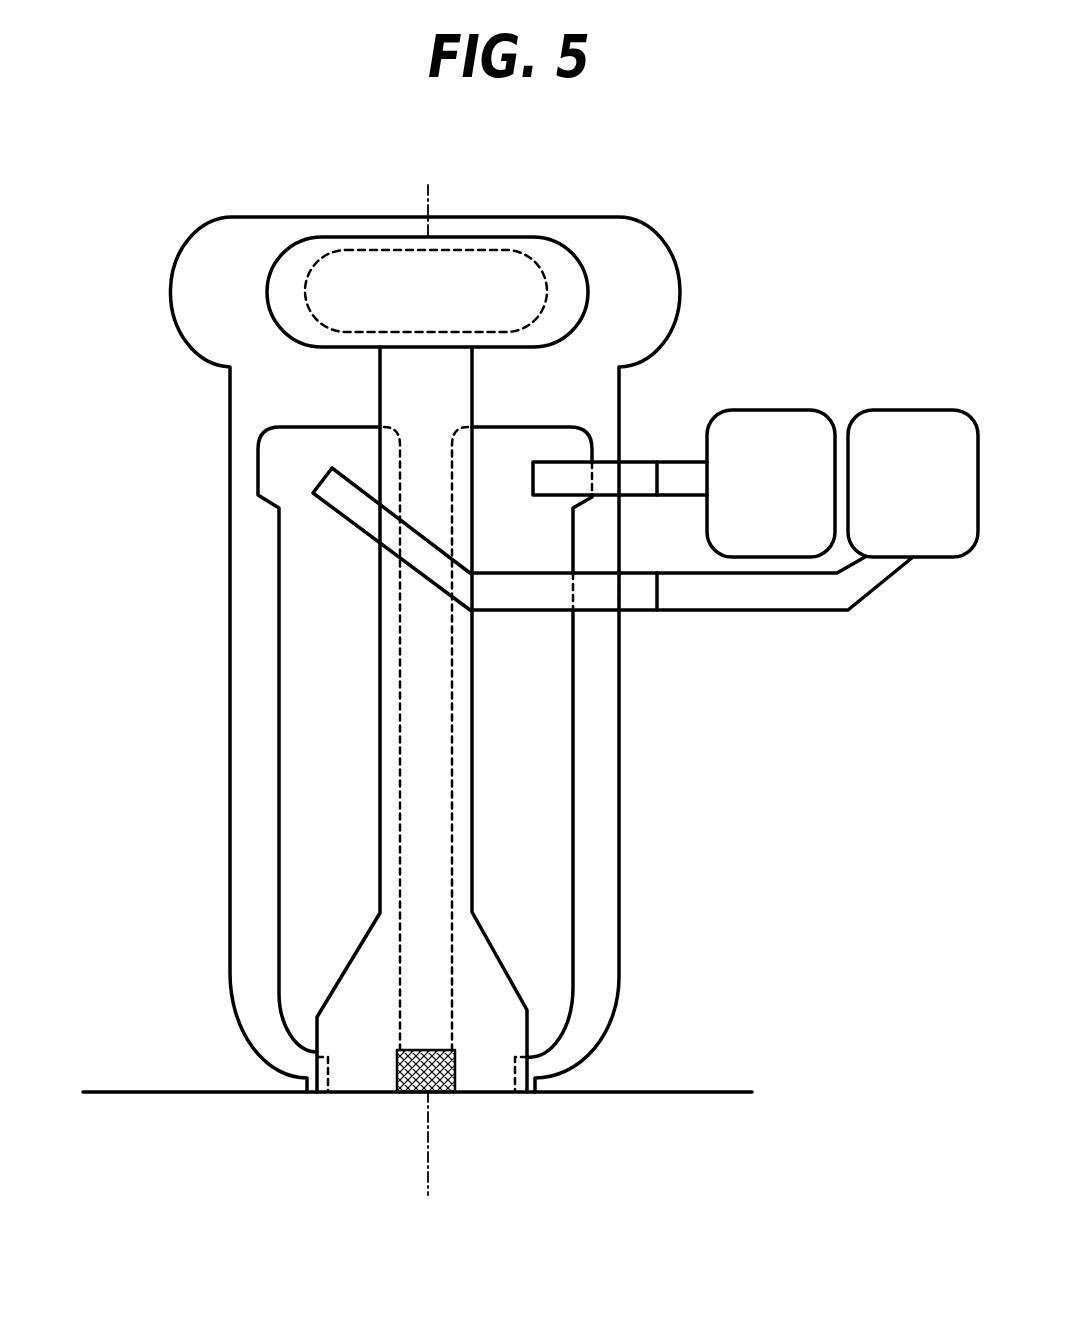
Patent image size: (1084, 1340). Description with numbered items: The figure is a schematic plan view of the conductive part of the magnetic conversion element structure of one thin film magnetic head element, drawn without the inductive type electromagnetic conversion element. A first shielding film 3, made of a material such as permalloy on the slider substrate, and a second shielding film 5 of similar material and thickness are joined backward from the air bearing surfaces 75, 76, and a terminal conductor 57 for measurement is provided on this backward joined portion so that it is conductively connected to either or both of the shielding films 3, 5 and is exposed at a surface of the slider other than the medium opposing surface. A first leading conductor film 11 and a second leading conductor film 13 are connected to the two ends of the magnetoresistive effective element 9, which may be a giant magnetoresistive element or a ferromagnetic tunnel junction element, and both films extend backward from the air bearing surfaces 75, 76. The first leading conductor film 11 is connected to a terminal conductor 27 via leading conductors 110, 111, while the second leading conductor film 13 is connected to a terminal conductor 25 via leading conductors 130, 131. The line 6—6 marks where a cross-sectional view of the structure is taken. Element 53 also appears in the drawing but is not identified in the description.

The first shielding film 3 is at (240, 813).
The second shielding film 5 is at (370, 992).
The section line 6— 6 is at (428, 153).
The magnetoresistive effective element 9 is at (428, 1048).
The first leading conductor film 11 is at (300, 600).
The second leading conductor film 13 is at (547, 870).
The terminal conductor 25 is at (747, 425).
The terminal conductor 27 is at (895, 430).
The inner slot 53 is at (307, 277).
The terminal conductor for measurement 57 is at (588, 273).
The air bearing surface 75 is at (465, 1133).
The air bearing surface 76 is at (712, 1092).
The leading conductor 110 is at (797, 600).
The leading conductor 111 is at (635, 592).
The leading conductor 130 is at (687, 490).
The leading conductor 131 is at (637, 470).